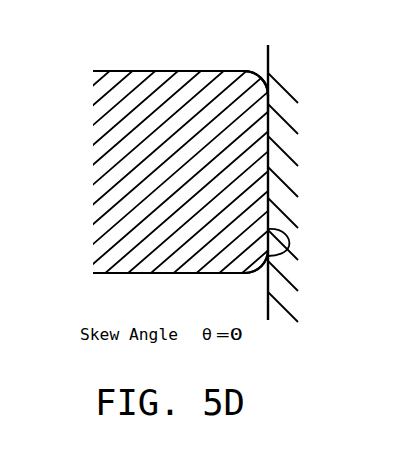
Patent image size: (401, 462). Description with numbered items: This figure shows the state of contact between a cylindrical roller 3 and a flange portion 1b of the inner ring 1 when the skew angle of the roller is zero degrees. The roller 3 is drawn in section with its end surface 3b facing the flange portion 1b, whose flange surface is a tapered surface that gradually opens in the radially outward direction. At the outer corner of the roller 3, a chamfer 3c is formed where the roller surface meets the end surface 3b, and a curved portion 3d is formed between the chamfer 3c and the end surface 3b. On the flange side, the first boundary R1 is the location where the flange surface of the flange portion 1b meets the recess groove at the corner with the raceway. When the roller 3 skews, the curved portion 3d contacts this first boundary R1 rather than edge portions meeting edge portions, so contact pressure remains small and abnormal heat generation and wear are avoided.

The inner ring 1 is at (304, 143).
The flange portion 1b is at (278, 163).
The cylindrical roller 3 is at (185, 71).
The end surface 3b is at (260, 273).
The chamfer 3c is at (262, 82).
The curved portion 3d is at (270, 91).
The first boundary R1 is at (273, 54).